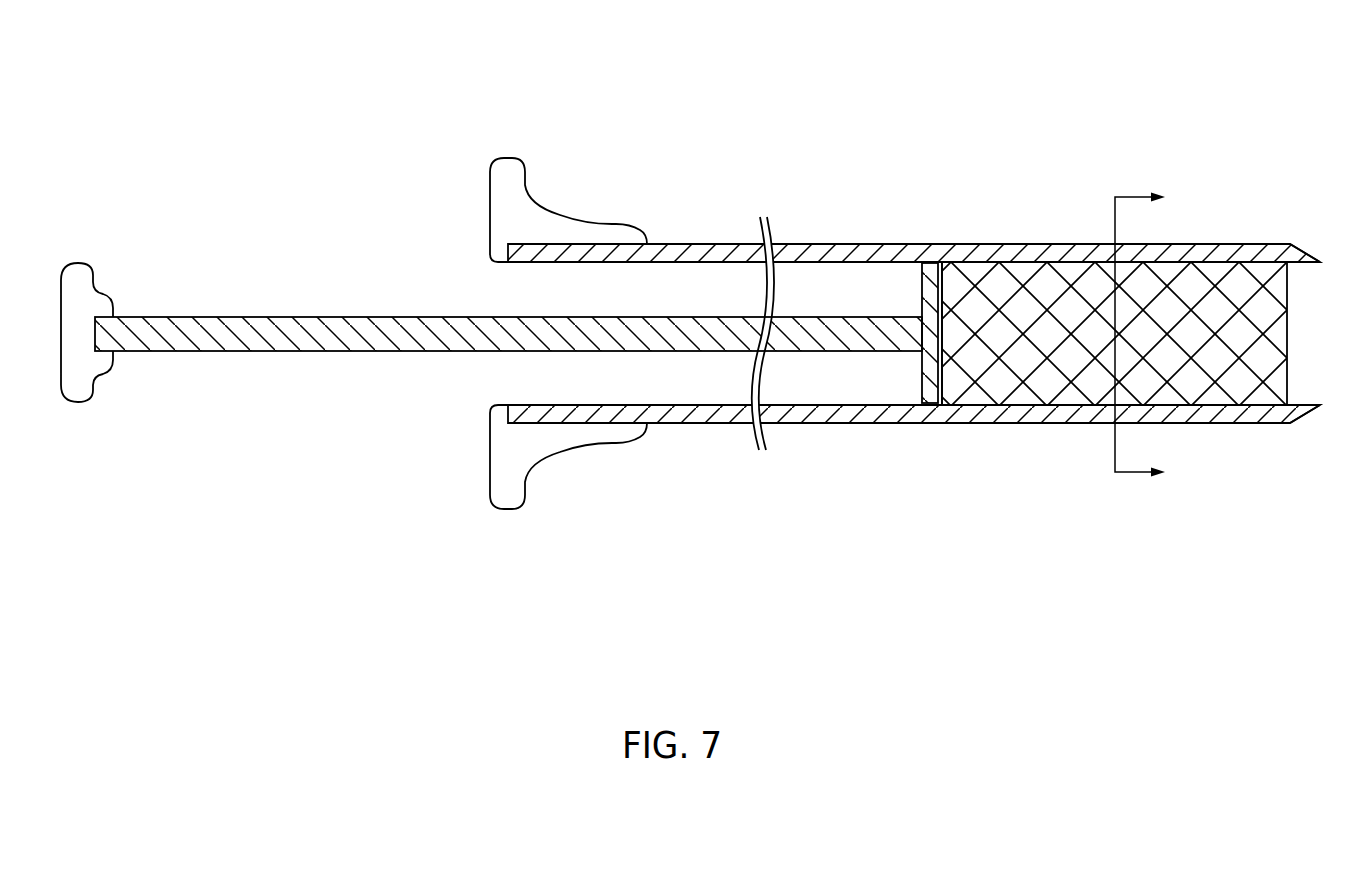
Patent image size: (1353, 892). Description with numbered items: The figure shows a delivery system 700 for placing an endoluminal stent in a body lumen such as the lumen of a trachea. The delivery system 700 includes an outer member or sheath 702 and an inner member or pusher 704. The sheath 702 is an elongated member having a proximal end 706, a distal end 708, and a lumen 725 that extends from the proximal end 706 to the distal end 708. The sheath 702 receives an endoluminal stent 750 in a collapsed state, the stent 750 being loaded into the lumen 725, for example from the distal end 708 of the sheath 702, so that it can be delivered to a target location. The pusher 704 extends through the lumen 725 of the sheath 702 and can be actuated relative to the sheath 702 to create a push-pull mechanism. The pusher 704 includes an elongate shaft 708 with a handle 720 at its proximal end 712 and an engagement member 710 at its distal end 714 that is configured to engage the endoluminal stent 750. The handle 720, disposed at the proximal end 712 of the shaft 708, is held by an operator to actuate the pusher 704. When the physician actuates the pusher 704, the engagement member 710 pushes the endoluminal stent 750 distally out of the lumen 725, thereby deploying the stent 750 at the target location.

The delivery system 700 is at (773, 65).
The sheath 702 is at (815, 250).
The pusher 704 is at (687, 368).
The proximal end 706 is at (473, 155).
The distal end 708 is at (405, 343).
The engagement member 710 is at (930, 393).
The proximal end 712 is at (102, 231).
The distal end 714 is at (910, 262).
The handle 720 is at (82, 392).
The lumen 725 is at (1317, 272).
The endoluminal stent 750 is at (1040, 390).